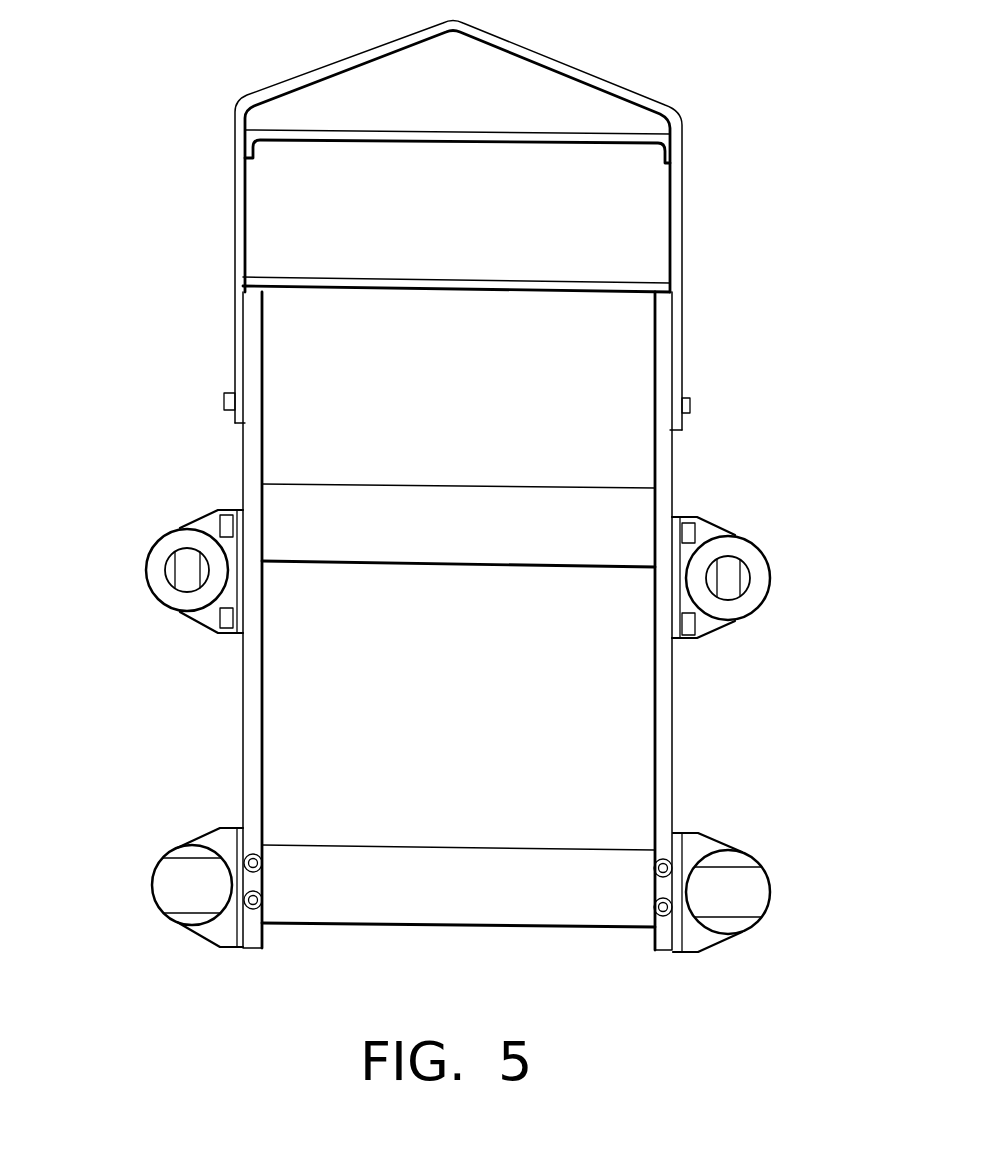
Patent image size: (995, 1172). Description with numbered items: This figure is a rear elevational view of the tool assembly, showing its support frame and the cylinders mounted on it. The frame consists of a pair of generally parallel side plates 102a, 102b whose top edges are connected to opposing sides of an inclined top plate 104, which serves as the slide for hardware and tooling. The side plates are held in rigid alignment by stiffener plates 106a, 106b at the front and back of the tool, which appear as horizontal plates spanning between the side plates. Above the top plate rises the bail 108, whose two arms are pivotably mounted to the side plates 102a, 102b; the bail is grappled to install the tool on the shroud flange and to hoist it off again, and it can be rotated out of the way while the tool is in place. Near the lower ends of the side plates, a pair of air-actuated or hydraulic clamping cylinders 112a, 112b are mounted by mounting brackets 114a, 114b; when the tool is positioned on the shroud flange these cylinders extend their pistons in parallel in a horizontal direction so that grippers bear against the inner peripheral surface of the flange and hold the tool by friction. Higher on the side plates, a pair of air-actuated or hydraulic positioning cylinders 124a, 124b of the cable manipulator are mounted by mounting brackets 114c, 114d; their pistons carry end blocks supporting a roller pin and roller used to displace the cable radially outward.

The bail 108 is at (568, 63).
The inclined top plate 104 is at (423, 278).
The side plate 102a is at (243, 453).
The side plate 102b is at (672, 458).
The stiffener plate 106a is at (402, 566).
The stiffener plate 106b is at (420, 928).
The mounting bracket 114a is at (218, 840).
The mounting bracket 114b is at (703, 836).
The mounting bracket 114c is at (200, 614).
The mounting bracket 114d is at (717, 631).
The clamping cylinder 112a is at (172, 920).
The clamping cylinder 112b is at (748, 925).
The positioning cylinder 124a is at (147, 582).
The positioning cylinder 124b is at (763, 555).